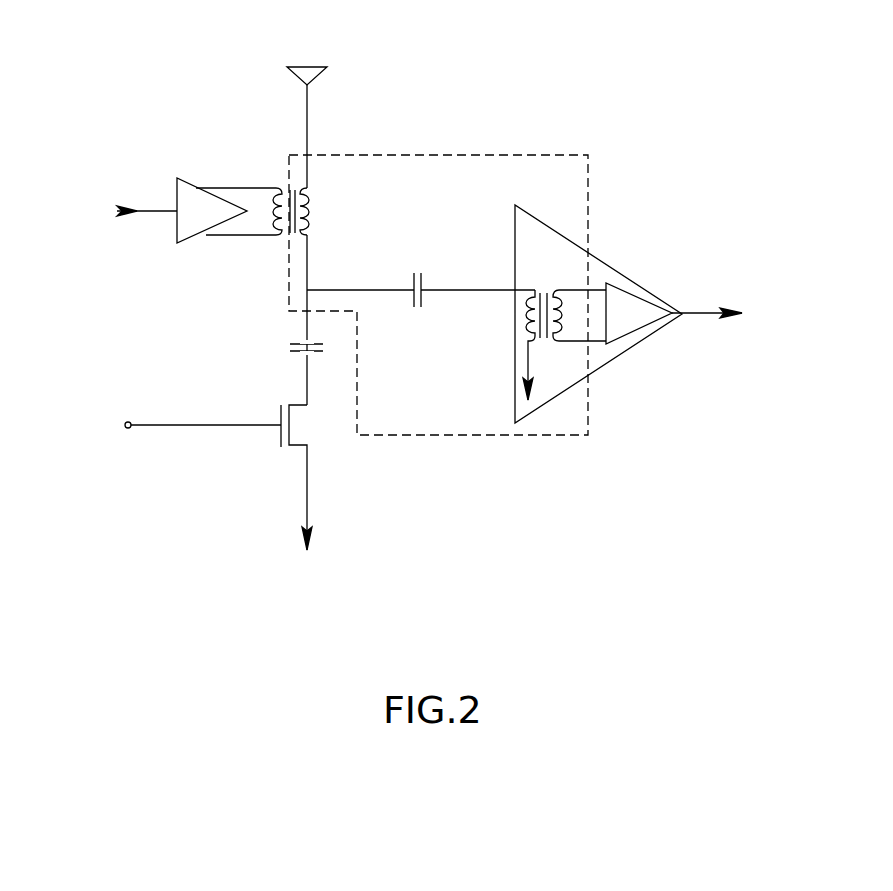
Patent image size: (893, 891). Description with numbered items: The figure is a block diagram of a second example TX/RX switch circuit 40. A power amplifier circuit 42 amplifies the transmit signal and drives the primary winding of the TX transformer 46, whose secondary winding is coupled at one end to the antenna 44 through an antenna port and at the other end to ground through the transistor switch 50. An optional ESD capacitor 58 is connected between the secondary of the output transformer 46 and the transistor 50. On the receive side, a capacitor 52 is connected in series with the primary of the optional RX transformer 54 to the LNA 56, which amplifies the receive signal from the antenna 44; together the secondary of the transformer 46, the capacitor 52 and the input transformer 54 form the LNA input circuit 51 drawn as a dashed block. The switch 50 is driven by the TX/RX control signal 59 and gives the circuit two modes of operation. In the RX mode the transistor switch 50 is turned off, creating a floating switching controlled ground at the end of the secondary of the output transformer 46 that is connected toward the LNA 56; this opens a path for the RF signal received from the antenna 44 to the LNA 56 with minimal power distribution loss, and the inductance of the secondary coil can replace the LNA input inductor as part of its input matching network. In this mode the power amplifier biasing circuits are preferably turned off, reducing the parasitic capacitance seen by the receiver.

The TX/RX switch circuit 40 is at (622, 58).
The power amplifier circuit 42 is at (215, 241).
The antenna 44 is at (314, 79).
The TX transformer 46 is at (284, 238).
The switch 50 is at (275, 442).
The LNA input circuit 51 is at (452, 436).
The capacitor 52 is at (424, 283).
The RX transformer 54 is at (545, 338).
The LNA 56 is at (634, 292).
The ESD capacitor 58 is at (301, 343).
The TX/RX control signal 59 is at (247, 423).